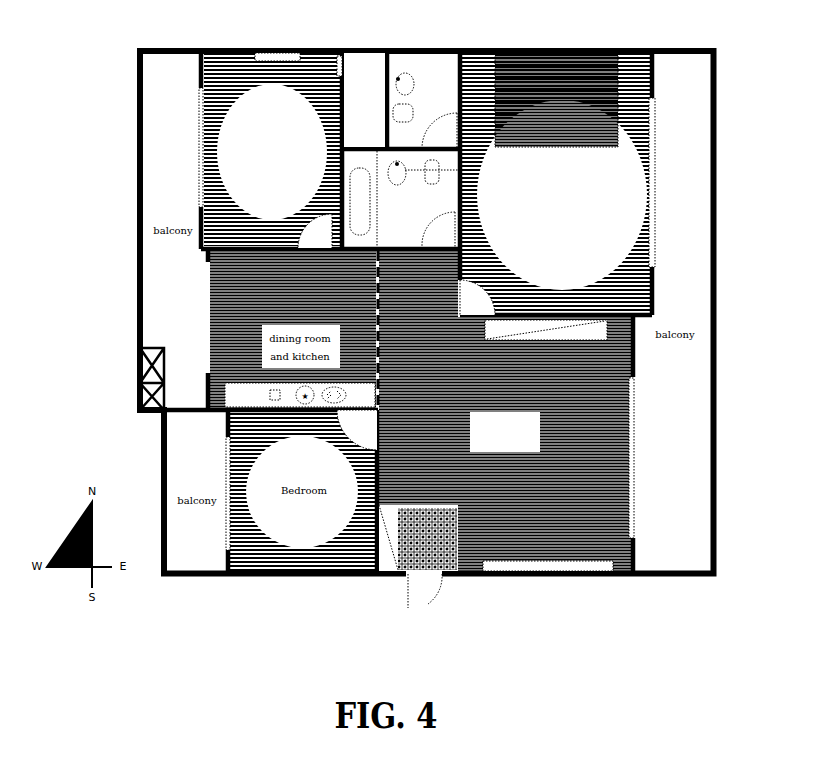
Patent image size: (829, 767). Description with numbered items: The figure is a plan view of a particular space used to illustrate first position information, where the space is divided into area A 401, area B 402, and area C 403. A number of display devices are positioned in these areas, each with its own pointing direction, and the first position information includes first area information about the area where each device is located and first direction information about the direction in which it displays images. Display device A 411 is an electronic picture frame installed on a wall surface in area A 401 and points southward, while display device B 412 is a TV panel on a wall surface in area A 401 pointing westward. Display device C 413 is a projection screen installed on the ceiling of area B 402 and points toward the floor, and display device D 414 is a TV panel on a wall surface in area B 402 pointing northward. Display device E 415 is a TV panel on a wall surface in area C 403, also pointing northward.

The area A 401 is at (228, 86).
The area B 402 is at (480, 86).
The area C 403 is at (622, 416).
The display device A 411 is at (277, 54).
The display device B 412 is at (347, 52).
The display device C 413 is at (568, 68).
The display device D 414 is at (617, 305).
The display device E 415 is at (620, 578).